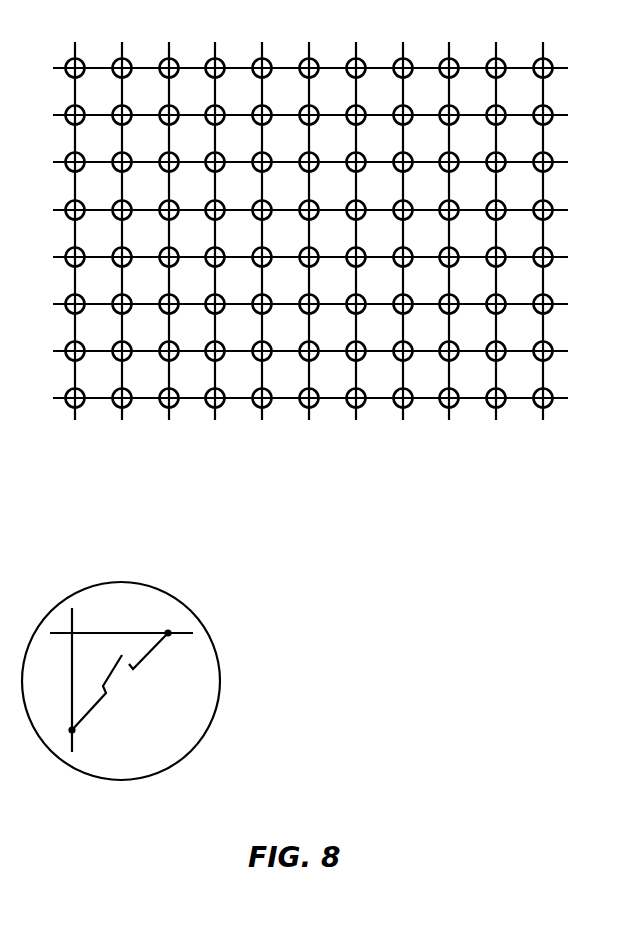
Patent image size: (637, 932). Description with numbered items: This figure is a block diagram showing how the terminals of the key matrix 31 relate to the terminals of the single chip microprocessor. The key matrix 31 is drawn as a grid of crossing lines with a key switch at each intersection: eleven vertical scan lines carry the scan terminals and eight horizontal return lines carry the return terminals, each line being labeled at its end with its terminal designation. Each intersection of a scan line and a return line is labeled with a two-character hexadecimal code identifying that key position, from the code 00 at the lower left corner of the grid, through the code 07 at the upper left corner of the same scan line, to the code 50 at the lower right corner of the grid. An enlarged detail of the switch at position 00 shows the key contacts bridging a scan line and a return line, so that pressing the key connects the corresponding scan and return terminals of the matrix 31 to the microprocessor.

The key matrix 31 is at (337, 291).
The key switch at matrix position 00 (hex), shown in detail 00 is at (61, 404).
The key switch at matrix position 07 (hex) 07 is at (86, 58).
The key switch at matrix position 50 (hex) 50 is at (554, 388).